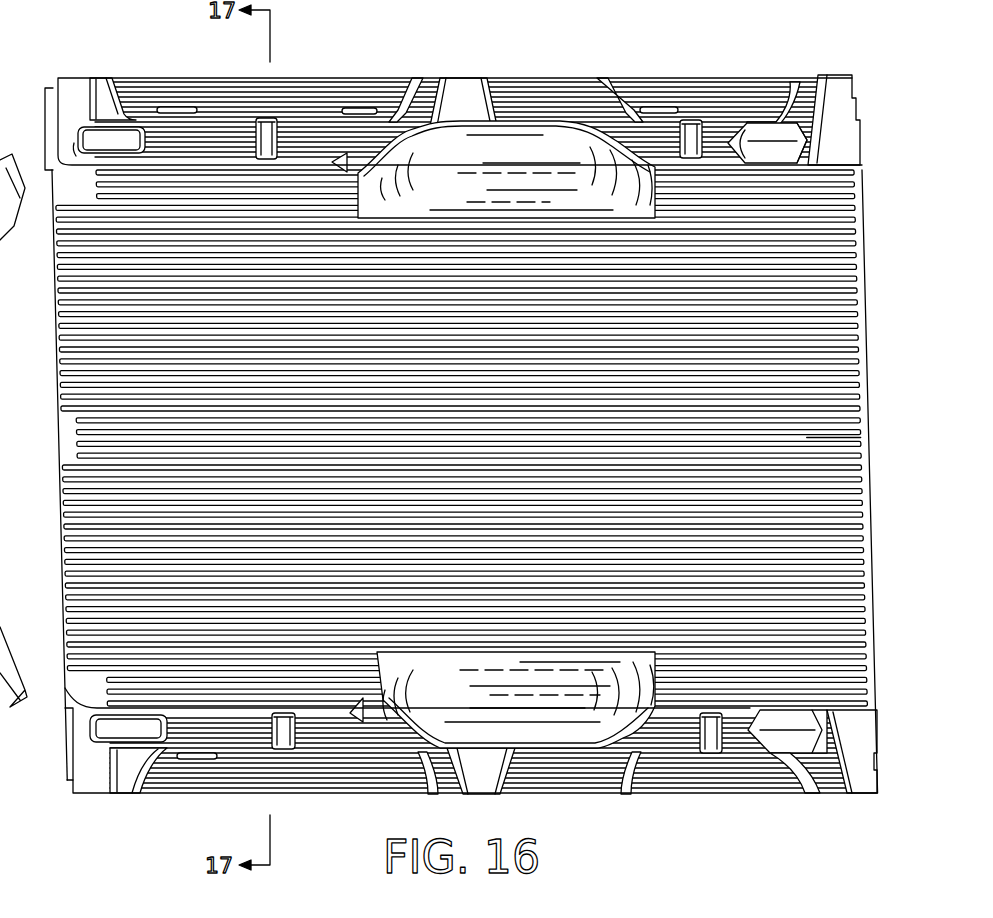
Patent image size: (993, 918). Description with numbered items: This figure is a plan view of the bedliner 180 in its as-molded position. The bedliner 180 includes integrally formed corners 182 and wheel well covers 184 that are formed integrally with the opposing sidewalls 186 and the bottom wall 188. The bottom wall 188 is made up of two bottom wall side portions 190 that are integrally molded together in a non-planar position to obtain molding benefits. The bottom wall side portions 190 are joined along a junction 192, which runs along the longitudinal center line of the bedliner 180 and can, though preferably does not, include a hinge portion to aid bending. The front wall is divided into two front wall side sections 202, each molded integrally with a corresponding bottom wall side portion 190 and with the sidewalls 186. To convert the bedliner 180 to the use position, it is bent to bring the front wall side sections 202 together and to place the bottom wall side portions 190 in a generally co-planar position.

The bedliner 180 is at (618, 62).
The integrally formed corners 182 is at (52, 87).
The wheel well covers 184 is at (510, 143).
The opposing sidewalls 186 is at (263, 97).
The bottom wall 188 is at (882, 363).
The bottom wall side portions 190 is at (830, 307).
The junction 192 is at (867, 433).
The front wall side sections 202 is at (57, 250).